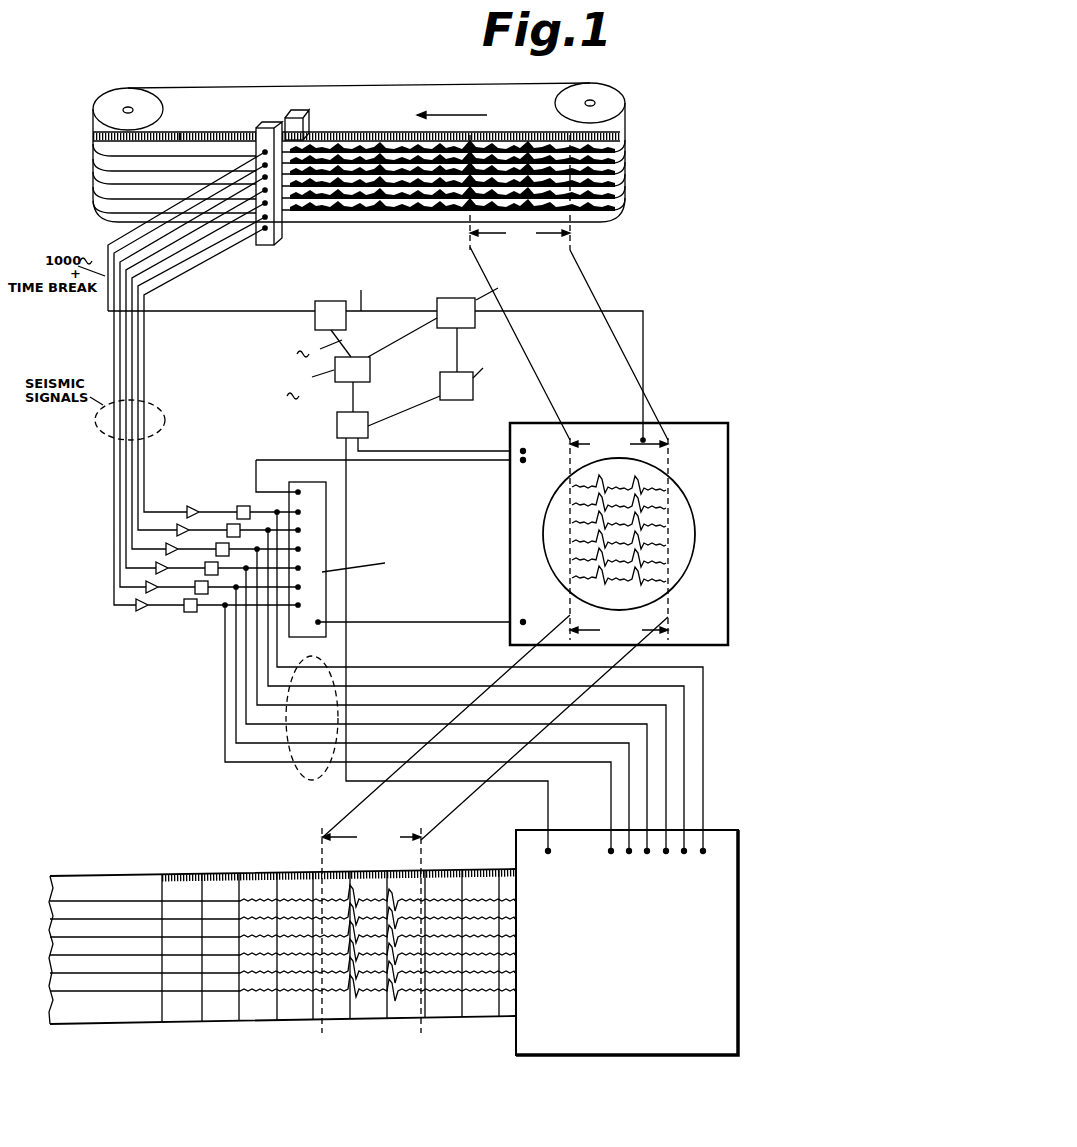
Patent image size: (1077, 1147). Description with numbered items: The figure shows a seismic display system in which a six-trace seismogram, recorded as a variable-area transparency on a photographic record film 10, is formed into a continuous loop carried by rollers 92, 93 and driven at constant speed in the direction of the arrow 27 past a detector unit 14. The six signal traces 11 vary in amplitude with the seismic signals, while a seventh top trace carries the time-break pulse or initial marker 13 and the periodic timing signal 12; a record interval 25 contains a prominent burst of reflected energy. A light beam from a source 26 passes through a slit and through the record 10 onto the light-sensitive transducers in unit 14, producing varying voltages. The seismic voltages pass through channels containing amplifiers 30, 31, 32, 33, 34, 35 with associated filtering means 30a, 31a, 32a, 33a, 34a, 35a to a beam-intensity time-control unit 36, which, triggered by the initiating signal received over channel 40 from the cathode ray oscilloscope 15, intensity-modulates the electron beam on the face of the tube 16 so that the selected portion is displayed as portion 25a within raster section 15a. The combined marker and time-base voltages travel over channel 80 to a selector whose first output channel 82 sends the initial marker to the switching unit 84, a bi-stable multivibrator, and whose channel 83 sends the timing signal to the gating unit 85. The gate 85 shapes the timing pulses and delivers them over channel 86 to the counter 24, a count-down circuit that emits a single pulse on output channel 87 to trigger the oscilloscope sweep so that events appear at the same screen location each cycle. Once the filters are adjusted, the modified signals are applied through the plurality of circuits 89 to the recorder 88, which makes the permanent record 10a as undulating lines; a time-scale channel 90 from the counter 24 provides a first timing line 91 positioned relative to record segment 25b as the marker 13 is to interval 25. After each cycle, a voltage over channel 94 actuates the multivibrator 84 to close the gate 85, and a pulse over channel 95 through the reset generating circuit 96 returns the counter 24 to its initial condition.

The photographic record film 10 is at (424, 84).
The permanent record 10a is at (143, 868).
The signal traces 11 is at (97, 167).
The timing signal 12 is at (240, 133).
The time-break pulse 13 is at (182, 136).
The detector unit 14 is at (270, 130).
The cathode ray oscilloscope 15 is at (697, 427).
The raster section 15a is at (619, 536).
The tube 16 is at (672, 490).
The counter 24 is at (313, 425).
The record interval 25 is at (569, 287).
The displayed portion 25a is at (495, 727).
The record segment 25b is at (371, 928).
The light source 26 is at (300, 112).
The arrow 27 is at (452, 104).
The amplifier 30 is at (186, 507).
The filtering means 30a is at (242, 505).
The amplifier 31 is at (176, 528).
The filtering means 31a is at (230, 523).
The amplifier 32 is at (165, 548).
The filtering means 32a is at (222, 546).
The amplifier 33 is at (155, 567).
The filtering means 33a is at (212, 576).
The amplifier 34 is at (145, 586).
The filtering means 34a is at (205, 594).
The amplifier 35 is at (136, 606).
The filtering means 35a is at (183, 612).
The beam-intensity time-control unit 36 is at (315, 529).
The channel 40 is at (319, 464).
The channel 80 is at (218, 313).
The first output channel 82 is at (400, 311).
The output channel 83 is at (343, 346).
The switching unit 84 is at (525, 296).
The gating unit 85 is at (344, 360).
The gating unit output channel 86 is at (357, 403).
The output channel 87 is at (397, 447).
The recorder 88 is at (627, 942).
The plurality of circuits 89 is at (306, 779).
The time-scale channel 90 is at (357, 783).
The first timing line 91 is at (165, 1013).
The roller 92 is at (112, 99).
The roller 93 is at (608, 108).
The channel 94 is at (646, 333).
The channel 95 is at (457, 348).
The reset generating circuit 96 is at (448, 389).